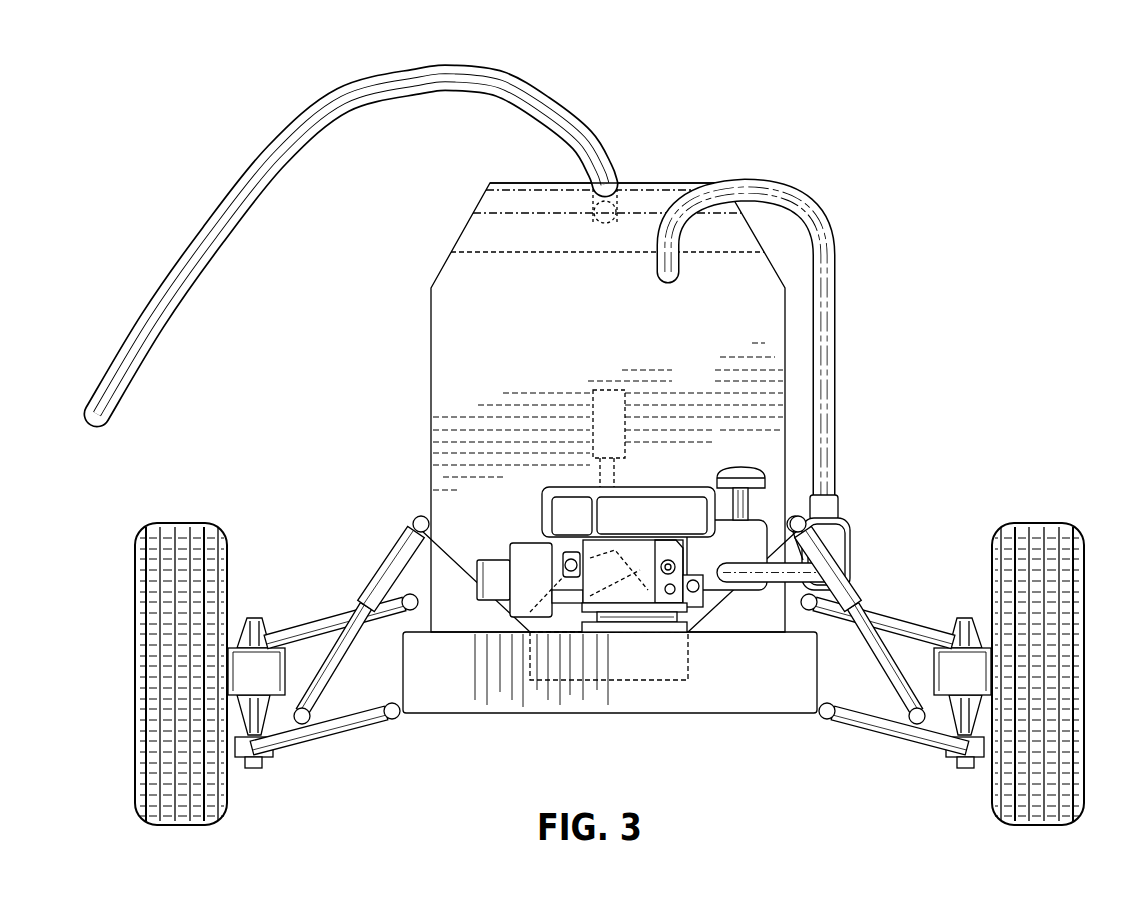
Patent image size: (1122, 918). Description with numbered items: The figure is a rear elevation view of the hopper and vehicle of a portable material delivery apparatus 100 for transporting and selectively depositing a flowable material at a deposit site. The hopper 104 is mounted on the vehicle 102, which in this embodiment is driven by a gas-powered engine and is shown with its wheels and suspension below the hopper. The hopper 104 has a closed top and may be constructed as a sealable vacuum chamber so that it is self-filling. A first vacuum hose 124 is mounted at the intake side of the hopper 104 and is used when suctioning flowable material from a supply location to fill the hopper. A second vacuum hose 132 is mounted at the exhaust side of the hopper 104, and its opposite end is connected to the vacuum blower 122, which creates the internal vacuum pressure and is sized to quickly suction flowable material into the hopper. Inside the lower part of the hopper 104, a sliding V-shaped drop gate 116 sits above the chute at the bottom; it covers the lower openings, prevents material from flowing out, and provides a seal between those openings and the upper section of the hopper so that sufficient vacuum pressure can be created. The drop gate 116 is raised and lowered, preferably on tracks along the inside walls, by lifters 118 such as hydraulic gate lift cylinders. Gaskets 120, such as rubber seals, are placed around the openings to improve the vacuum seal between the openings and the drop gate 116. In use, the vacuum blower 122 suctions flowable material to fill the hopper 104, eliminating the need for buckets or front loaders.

The portable material delivery apparatus 100 is at (915, 194).
The vehicle 102 is at (894, 610).
The hopper 104 is at (665, 170).
The drop gate 116 is at (627, 548).
The lifters 118 is at (626, 403).
The gaskets 120 is at (688, 633).
The vacuum blower 122 is at (838, 531).
The first vacuum hose 124 is at (547, 100).
The second vacuum hose 132 is at (822, 311).